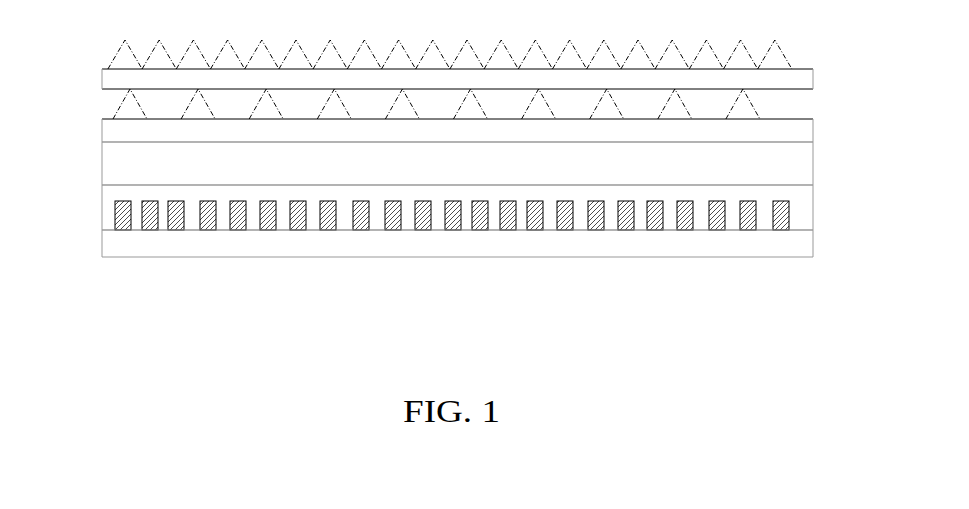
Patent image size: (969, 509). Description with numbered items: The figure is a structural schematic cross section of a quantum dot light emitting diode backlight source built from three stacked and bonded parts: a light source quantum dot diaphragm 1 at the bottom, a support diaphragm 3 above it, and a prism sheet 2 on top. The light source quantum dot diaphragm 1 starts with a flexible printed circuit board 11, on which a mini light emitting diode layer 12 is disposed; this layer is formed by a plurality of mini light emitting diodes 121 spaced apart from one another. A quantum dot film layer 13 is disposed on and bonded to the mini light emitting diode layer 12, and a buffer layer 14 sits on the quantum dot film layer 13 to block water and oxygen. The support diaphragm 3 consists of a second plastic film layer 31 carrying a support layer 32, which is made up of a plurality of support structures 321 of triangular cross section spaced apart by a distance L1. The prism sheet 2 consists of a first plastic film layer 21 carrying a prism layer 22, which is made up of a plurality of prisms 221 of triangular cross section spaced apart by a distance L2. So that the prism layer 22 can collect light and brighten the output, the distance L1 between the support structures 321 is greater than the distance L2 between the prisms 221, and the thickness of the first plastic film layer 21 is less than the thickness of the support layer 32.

The light source quantum dot diaphragm 1 is at (477, 199).
The flexible printed circuit board 11 is at (499, 242).
The mini light emitting diode layer 12 is at (456, 215).
The mini light emitting diode 121 is at (115, 215).
The quantum dot film layer 13 is at (797, 198).
The buffer layer 14 is at (793, 163).
The prism sheet 2 is at (469, 67).
The first plastic film layer 21 is at (795, 82).
The prism layer 22 is at (454, 55).
The prism 221 is at (125, 55).
The support diaphragm 3 is at (473, 116).
The second plastic film layer 31 is at (797, 131).
The support layer 32 is at (458, 105).
The support structure 321 is at (128, 107).
The distance between support structures L1 is at (741, 88).
The distance between prisms L2 is at (773, 40).